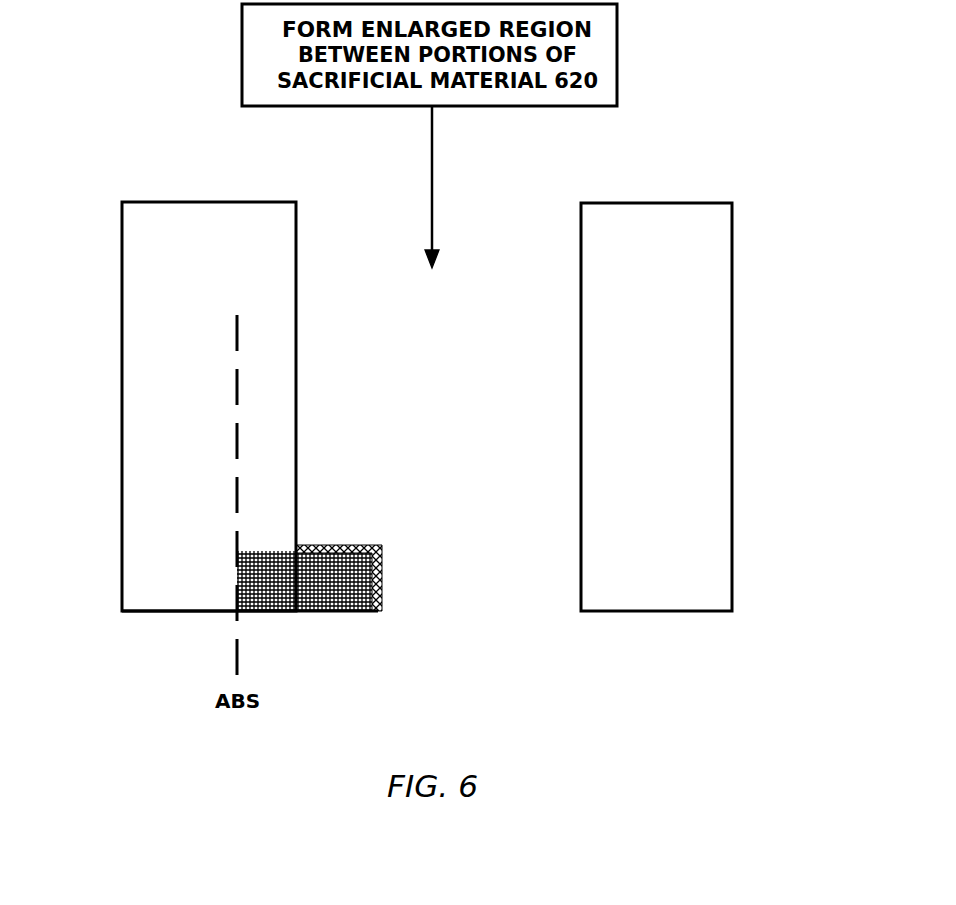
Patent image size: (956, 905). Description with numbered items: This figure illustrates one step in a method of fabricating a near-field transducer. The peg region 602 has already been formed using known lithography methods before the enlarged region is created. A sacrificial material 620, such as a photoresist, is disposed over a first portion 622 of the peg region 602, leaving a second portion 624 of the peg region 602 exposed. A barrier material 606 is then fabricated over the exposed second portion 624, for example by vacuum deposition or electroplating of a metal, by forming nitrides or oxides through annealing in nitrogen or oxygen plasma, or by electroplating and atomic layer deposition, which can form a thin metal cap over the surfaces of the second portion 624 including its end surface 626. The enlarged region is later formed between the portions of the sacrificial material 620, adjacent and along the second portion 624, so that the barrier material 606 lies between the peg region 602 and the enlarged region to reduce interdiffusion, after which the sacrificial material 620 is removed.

The sacrificial material 620 is at (112, 268).
The second portion 624 is at (283, 628).
The first portion 622 is at (345, 628).
The end surface 626 is at (373, 576).
The barrier material 606 is at (351, 543).
The peg region 602 is at (390, 656).